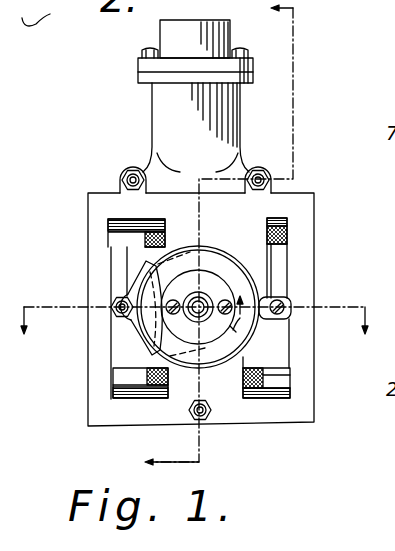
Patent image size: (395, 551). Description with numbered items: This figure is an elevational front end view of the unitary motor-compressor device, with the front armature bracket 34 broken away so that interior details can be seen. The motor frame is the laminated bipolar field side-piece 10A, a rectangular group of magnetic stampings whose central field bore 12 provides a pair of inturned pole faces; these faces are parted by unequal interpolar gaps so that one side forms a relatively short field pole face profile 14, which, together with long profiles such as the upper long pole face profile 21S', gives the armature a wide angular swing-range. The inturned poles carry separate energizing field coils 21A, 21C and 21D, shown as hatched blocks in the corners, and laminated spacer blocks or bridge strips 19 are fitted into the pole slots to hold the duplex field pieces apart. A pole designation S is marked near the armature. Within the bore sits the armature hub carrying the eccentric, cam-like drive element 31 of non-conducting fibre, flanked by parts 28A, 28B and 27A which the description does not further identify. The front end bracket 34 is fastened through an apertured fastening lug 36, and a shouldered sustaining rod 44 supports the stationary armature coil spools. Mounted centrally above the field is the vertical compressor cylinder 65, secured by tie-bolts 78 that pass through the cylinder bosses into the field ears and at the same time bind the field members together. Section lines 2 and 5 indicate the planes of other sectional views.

The bipolar field side-piece 10A is at (281, 414).
The short field pole face profile 14 is at (182, 27).
The vertical cylinder 65 is at (232, 116).
The tie-bolts 78 is at (262, 175).
The spacer blocks or bridge strips 19 is at (127, 219).
The field coil 21C is at (110, 235).
The upper long pole face profile 21S' is at (78, 323).
The field coil 21A is at (270, 244).
The field coil 21D is at (264, 376).
The south pole S is at (162, 362).
The rotor ring 28A is at (235, 341).
The rotor ring segment 27A is at (222, 287).
The eccentric drive element 31 is at (203, 270).
The central field bore 12 is at (188, 373).
The rotor ring segment 28B is at (162, 270).
The front end bracket 34 is at (153, 333).
The fastening lugs 36 is at (111, 303).
The shouldered sustaining rods 44 is at (290, 301).
The section line 5- 5 is at (194, 331).
The section line 2- 2 is at (205, 240).